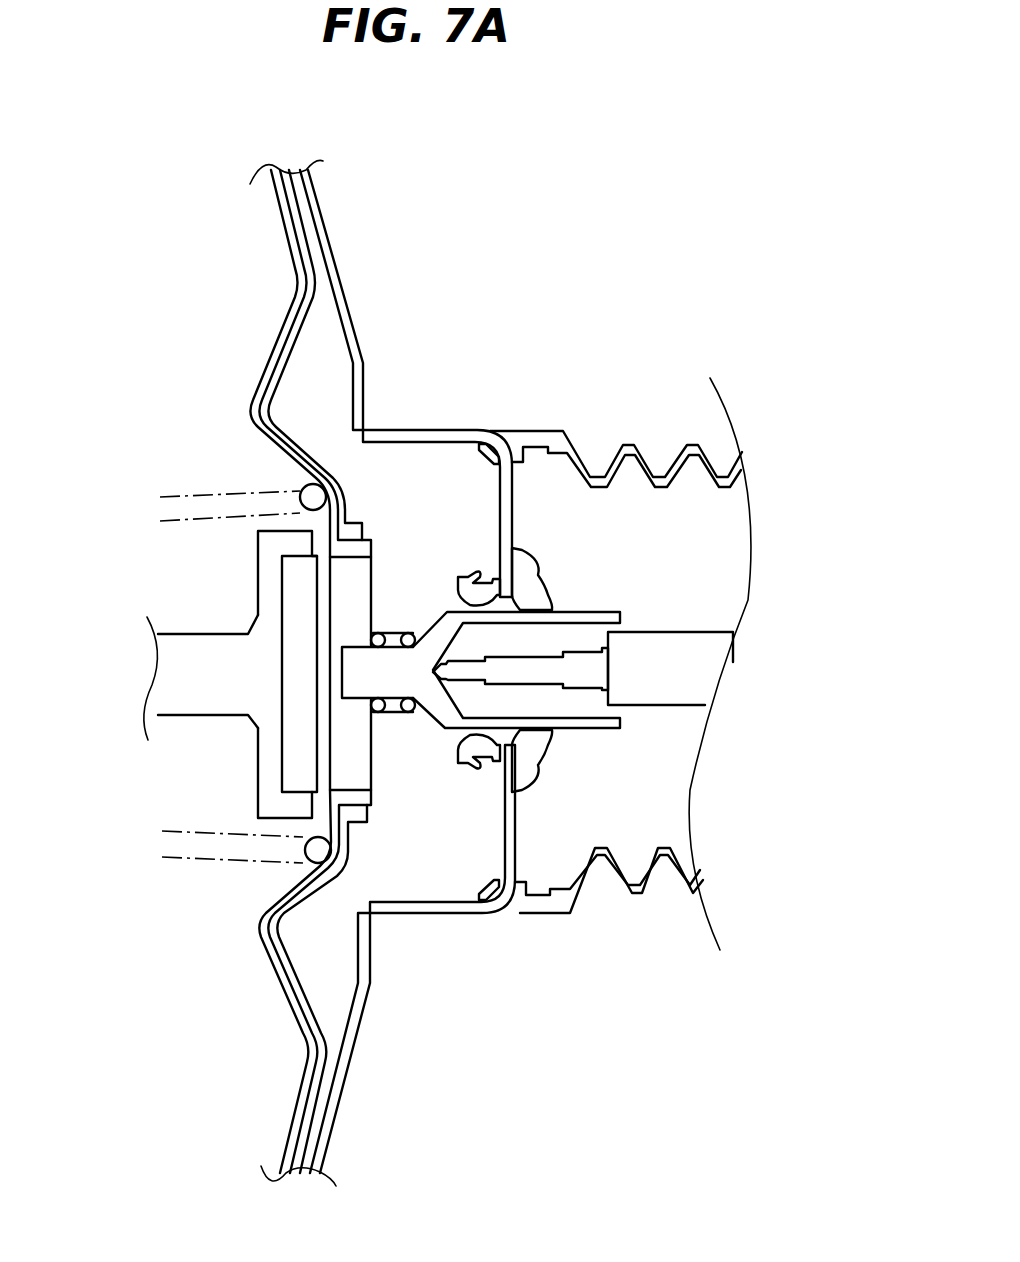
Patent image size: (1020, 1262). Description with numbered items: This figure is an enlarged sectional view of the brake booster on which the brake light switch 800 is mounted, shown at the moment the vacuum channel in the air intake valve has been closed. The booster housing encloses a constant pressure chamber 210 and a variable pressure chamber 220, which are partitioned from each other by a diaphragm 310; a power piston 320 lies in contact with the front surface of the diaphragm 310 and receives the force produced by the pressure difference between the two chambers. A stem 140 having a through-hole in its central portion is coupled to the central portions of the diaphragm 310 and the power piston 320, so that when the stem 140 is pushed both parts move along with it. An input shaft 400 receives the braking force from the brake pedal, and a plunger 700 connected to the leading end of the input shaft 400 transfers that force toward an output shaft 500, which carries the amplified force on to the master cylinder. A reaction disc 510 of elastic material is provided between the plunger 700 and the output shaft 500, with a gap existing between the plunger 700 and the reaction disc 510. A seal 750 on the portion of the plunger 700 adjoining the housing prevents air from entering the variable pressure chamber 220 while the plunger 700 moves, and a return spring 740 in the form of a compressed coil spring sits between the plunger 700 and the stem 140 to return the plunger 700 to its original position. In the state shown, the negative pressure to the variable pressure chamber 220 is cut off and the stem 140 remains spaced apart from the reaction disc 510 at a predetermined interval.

The stem 140 is at (358, 598).
The constant pressure chamber 210 is at (235, 300).
The variable pressure chamber 220 is at (488, 520).
The diaphragm 310 is at (297, 230).
The power piston 320 is at (280, 200).
The input shaft 400 is at (575, 670).
The output shaft 500 is at (178, 682).
The reaction disc 510 is at (300, 752).
The plunger 700 is at (590, 727).
The return spring 740 is at (400, 712).
The seal 750 is at (532, 563).
The brake light switch 800 is at (205, 497).